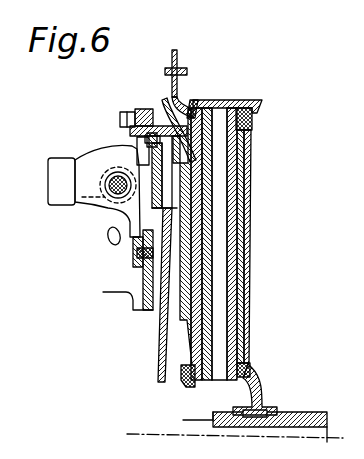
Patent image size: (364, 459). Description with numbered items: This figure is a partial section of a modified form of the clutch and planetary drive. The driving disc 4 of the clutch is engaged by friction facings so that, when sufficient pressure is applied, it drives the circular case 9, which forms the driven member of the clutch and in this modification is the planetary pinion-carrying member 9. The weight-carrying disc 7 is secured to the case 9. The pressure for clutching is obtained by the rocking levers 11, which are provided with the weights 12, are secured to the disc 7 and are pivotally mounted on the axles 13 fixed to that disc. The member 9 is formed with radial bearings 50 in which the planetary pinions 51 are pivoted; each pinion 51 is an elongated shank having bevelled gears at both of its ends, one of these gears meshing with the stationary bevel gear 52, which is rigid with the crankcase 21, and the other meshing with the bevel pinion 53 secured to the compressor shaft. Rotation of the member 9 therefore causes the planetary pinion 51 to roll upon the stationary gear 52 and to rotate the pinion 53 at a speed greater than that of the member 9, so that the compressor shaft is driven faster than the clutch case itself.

The driving disc 4 is at (163, 335).
The weight-carrying disc 7 is at (148, 282).
The planetary pinion-carrying member 9 is at (163, 102).
The rocking levers 11 is at (112, 243).
The weights 12 is at (63, 170).
The axles 13 is at (117, 205).
The crankcase 21 is at (178, 57).
The radial bearings 50 is at (249, 238).
The planetary pinions 51 is at (240, 108).
The stationary bevel gear 52 is at (193, 101).
The bevel pinion 53 is at (263, 394).